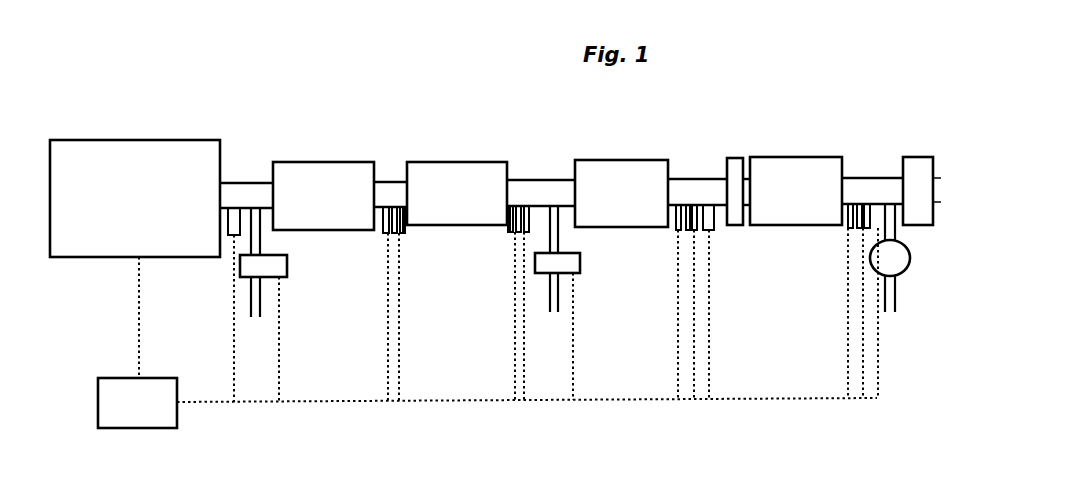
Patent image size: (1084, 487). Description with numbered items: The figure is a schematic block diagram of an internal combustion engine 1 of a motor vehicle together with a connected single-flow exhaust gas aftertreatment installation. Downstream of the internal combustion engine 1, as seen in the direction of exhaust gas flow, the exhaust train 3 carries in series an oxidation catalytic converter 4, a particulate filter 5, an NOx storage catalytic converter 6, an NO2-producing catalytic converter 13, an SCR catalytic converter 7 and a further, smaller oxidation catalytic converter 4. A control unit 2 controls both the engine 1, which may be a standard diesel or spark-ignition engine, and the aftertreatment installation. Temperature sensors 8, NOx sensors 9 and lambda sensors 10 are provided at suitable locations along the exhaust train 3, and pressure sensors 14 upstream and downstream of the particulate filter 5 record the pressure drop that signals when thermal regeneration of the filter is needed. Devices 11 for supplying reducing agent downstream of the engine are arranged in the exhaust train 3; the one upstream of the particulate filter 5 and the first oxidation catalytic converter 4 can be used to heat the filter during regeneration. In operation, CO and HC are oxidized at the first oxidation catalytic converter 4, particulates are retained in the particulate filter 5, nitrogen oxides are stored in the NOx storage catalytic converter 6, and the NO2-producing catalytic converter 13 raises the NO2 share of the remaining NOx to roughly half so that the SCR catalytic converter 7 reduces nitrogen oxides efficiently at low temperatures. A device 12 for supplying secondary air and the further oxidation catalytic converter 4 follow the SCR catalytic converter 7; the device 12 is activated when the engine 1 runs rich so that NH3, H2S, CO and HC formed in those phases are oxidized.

The internal combustion engine 1 is at (120, 160).
The control unit 2 is at (160, 392).
The exhaust train 3 is at (240, 193).
The oxidation catalytic converter 4 is at (332, 210).
The particulate filter 5 is at (455, 183).
The NOx storage catalytic converter 6 is at (615, 178).
The SCR catalytic converter 7 is at (792, 180).
The temperature sensors 8 is at (385, 232).
The NOx sensors 9 is at (712, 232).
The lambda sensors 10 is at (230, 237).
The device for supplying reducing agent 11 is at (275, 265).
The device for supplying secondary air 12 is at (900, 280).
The NO2-producing catalytic converter 13 is at (735, 167).
The pressure sensors 14 is at (403, 232).